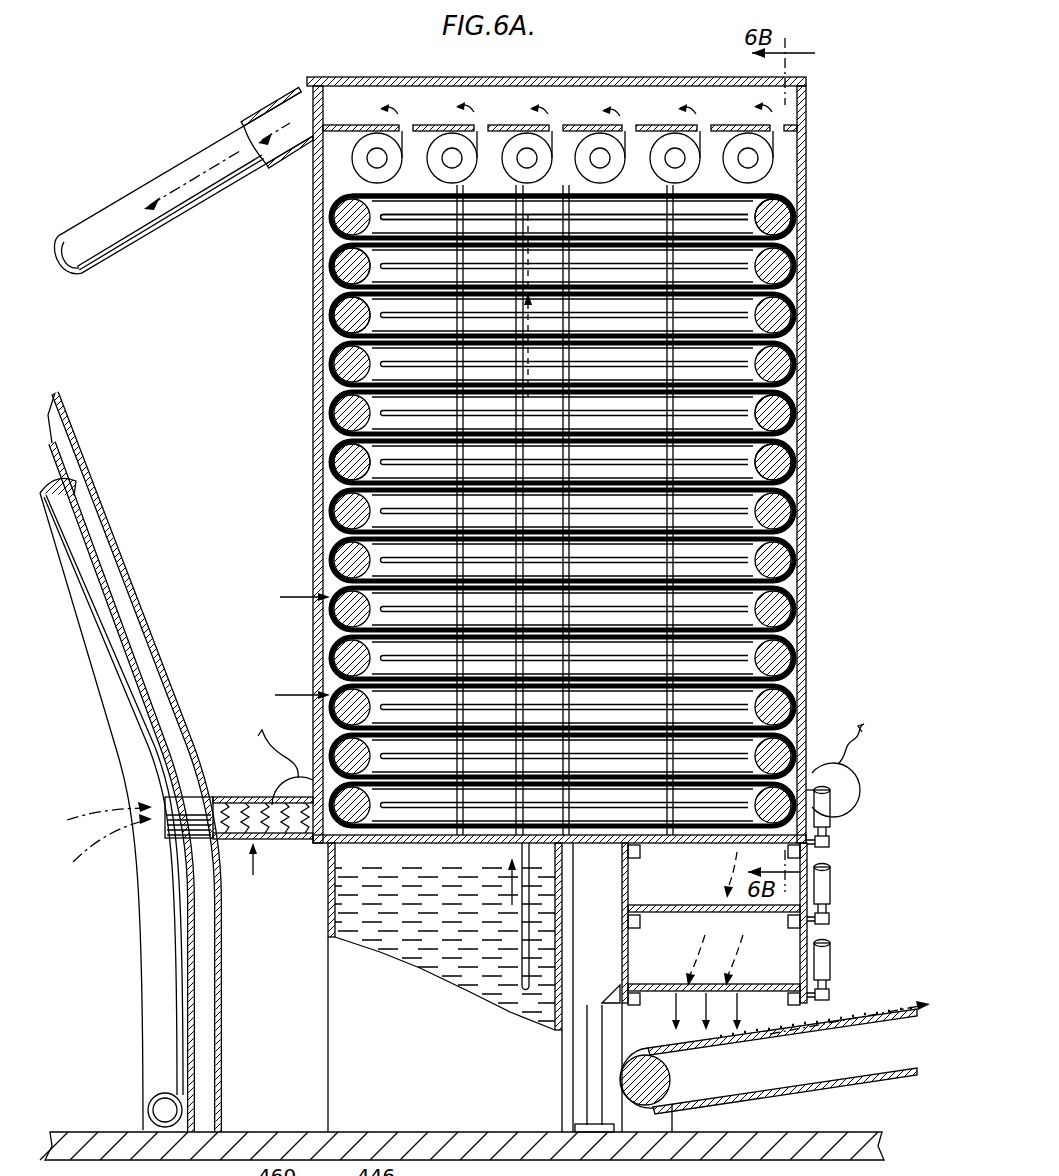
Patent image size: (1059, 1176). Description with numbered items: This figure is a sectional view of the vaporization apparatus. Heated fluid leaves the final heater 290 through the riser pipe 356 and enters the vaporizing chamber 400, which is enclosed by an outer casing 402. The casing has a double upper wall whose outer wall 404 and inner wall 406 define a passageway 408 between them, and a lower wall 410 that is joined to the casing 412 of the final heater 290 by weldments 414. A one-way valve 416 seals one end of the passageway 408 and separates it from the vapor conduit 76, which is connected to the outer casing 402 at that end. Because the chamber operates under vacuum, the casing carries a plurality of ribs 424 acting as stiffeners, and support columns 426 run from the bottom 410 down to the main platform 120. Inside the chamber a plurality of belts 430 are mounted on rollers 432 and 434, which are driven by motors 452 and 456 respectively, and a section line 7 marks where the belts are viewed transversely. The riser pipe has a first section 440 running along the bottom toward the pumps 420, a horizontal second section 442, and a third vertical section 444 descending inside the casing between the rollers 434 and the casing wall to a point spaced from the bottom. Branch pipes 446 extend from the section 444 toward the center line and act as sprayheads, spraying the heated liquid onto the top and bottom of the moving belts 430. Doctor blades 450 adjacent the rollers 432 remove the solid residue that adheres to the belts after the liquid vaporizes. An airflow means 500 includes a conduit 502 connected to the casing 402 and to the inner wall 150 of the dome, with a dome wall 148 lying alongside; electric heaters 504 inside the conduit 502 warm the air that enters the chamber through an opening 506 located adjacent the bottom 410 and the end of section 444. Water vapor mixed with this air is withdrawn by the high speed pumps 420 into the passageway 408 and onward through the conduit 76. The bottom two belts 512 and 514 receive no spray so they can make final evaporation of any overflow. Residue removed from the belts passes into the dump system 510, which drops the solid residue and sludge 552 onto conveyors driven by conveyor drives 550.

The section line 7- 7 is at (302, 635).
The vapor conduit 76 is at (176, 180).
The main platform 120 is at (252, 1146).
The outer duct wall 148 is at (98, 460).
The inner wall of the dome 150 is at (76, 430).
The final heater 290 is at (440, 1054).
The riser pipe 356 is at (522, 928).
The vaporizing chamber 400 is at (808, 285).
The outer casing 402 is at (808, 384).
The outer wall 404 is at (583, 80).
The inner wall 406 is at (488, 128).
The passageway 408 is at (738, 113).
The lower wall 410 is at (606, 846).
The casing of the final heater 412 is at (562, 928).
The weldments 414 is at (556, 848).
The one-way valve 416 is at (334, 108).
The high speed pumps 420 is at (615, 150).
The ribs 424 is at (580, 194).
The support columns 426 is at (594, 1006).
The belts 430 is at (790, 428).
The rollers 432 is at (800, 460).
The rollers 434 is at (330, 455).
The first section 440 is at (535, 233).
The horizontal second section 442 is at (400, 190).
The third vertical section 444 is at (330, 347).
The branch pipes 446 is at (331, 253).
The doctor blades 450 is at (792, 210).
The motor 452 is at (852, 796).
The motor 456 is at (286, 790).
The airflow means 500 is at (266, 872).
The conduit 502 is at (198, 796).
The electric heaters 504 is at (226, 841).
The opening 506 is at (305, 841).
The dump system 510 is at (846, 872).
The bottom belt 512 is at (790, 777).
The bottom belt 514 is at (788, 734).
The conveyor drives 550 is at (672, 1080).
The solid residue and sludge 552 is at (836, 1014).